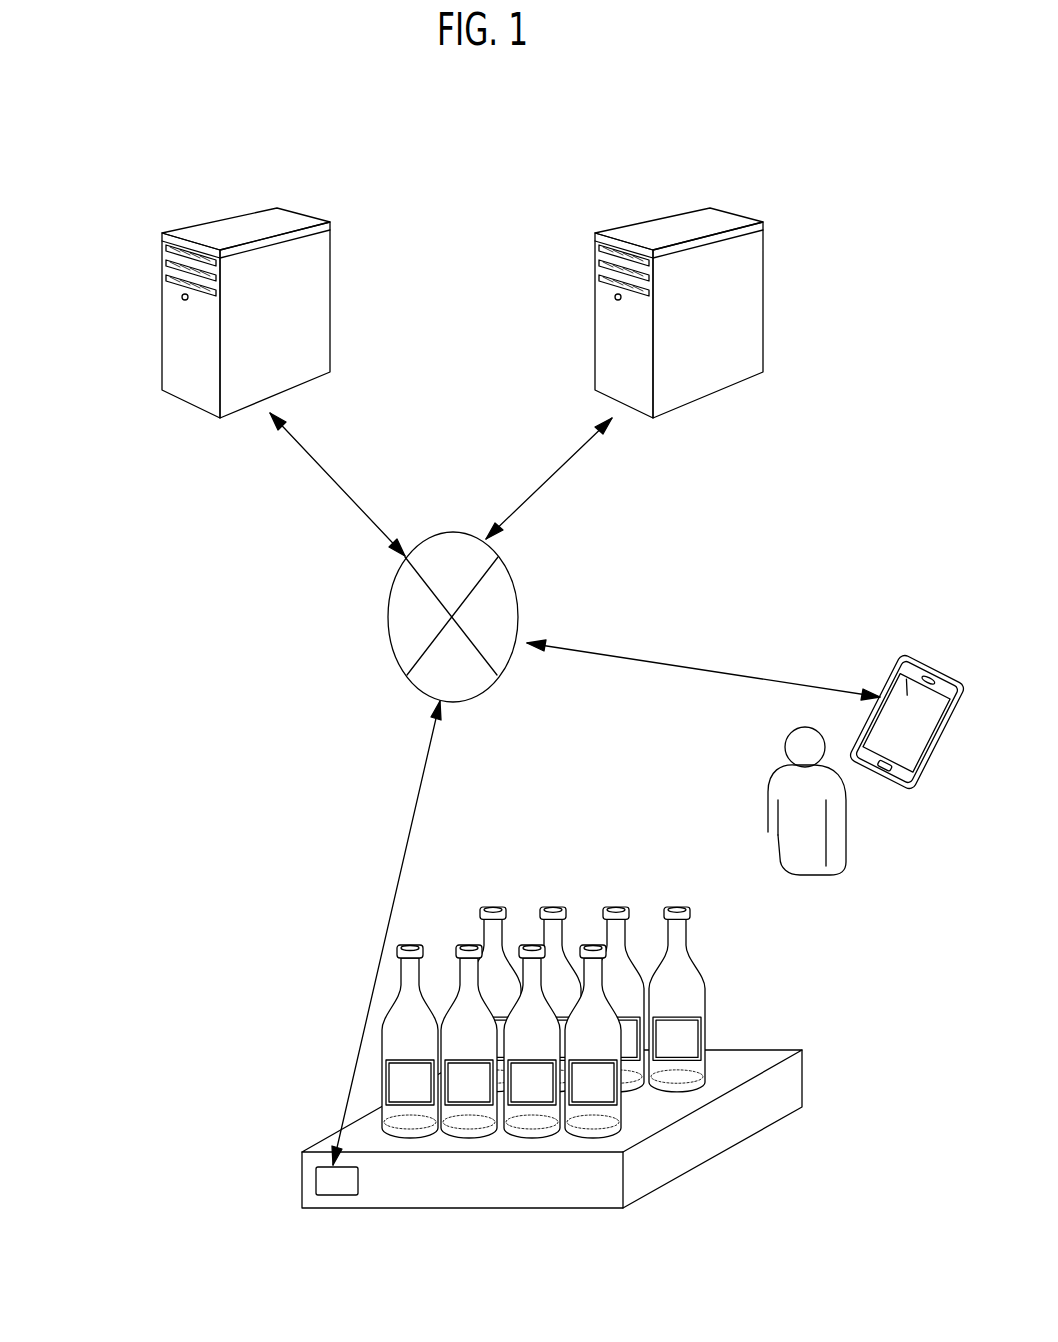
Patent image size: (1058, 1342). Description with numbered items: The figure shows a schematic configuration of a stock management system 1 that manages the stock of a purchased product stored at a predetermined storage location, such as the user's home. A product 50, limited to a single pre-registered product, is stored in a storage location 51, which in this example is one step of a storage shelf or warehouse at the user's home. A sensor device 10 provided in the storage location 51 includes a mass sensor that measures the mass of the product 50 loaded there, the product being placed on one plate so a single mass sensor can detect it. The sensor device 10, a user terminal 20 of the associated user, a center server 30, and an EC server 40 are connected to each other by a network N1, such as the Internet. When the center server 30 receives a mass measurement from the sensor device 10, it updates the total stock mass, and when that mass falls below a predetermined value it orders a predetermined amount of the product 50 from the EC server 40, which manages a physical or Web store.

The stock management system 1 is at (902, 435).
The sensor device 10 is at (347, 1188).
The user terminal 20 is at (893, 664).
The center server 30 is at (611, 322).
The EC server 40 is at (178, 322).
The network N1 is at (517, 590).
The product 50 is at (707, 988).
The storage location 51 is at (765, 1048).